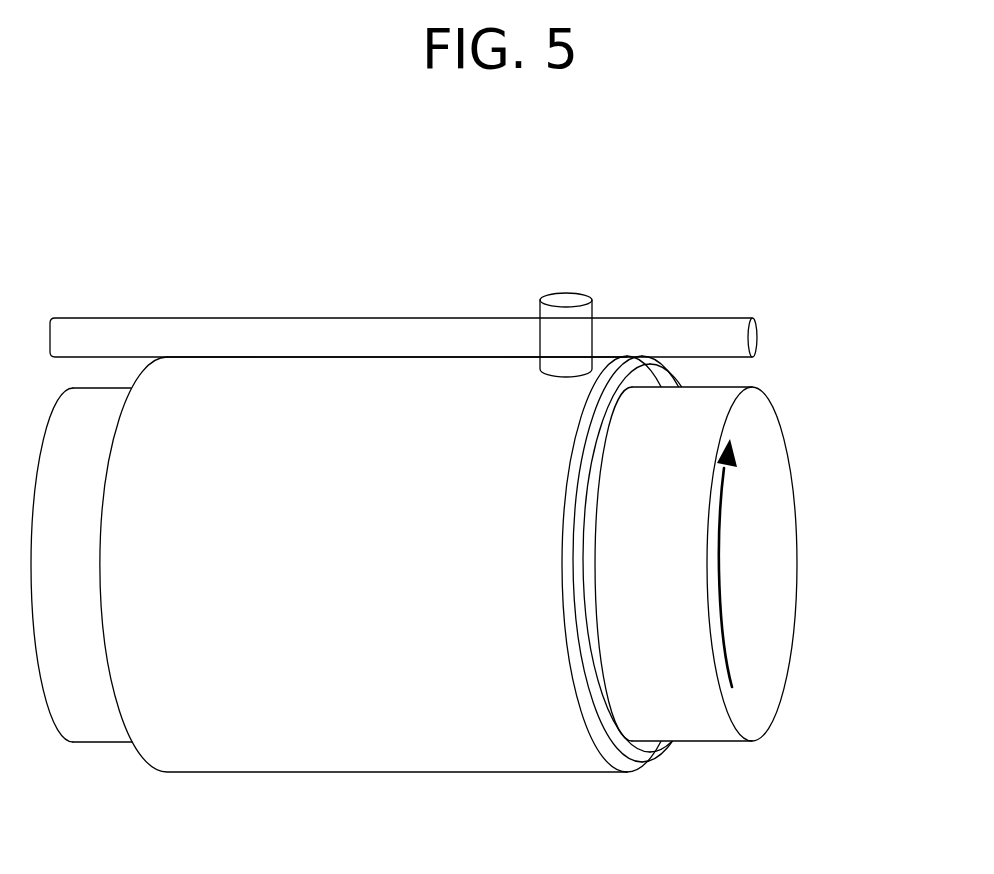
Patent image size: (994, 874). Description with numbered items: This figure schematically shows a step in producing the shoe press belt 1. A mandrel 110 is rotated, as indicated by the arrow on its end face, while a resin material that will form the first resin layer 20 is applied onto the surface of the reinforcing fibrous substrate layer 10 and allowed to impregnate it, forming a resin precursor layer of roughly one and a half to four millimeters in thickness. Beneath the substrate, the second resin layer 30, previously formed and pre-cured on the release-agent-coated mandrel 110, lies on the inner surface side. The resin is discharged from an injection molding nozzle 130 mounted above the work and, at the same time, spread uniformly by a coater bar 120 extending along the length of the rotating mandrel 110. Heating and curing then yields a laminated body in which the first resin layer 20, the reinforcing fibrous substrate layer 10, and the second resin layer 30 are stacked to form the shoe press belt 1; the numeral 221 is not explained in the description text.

The shoe press belt 1 is at (268, 395).
The reinforcing fibrous substrate layer 10 is at (620, 744).
The first resin layer 20 is at (588, 713).
The second resin layer 30 is at (647, 746).
The mandrel 110 is at (775, 555).
The coater bar 120 is at (758, 334).
The injection molding nozzle 130 is at (565, 297).
The bobbin body 221 is at (310, 773).